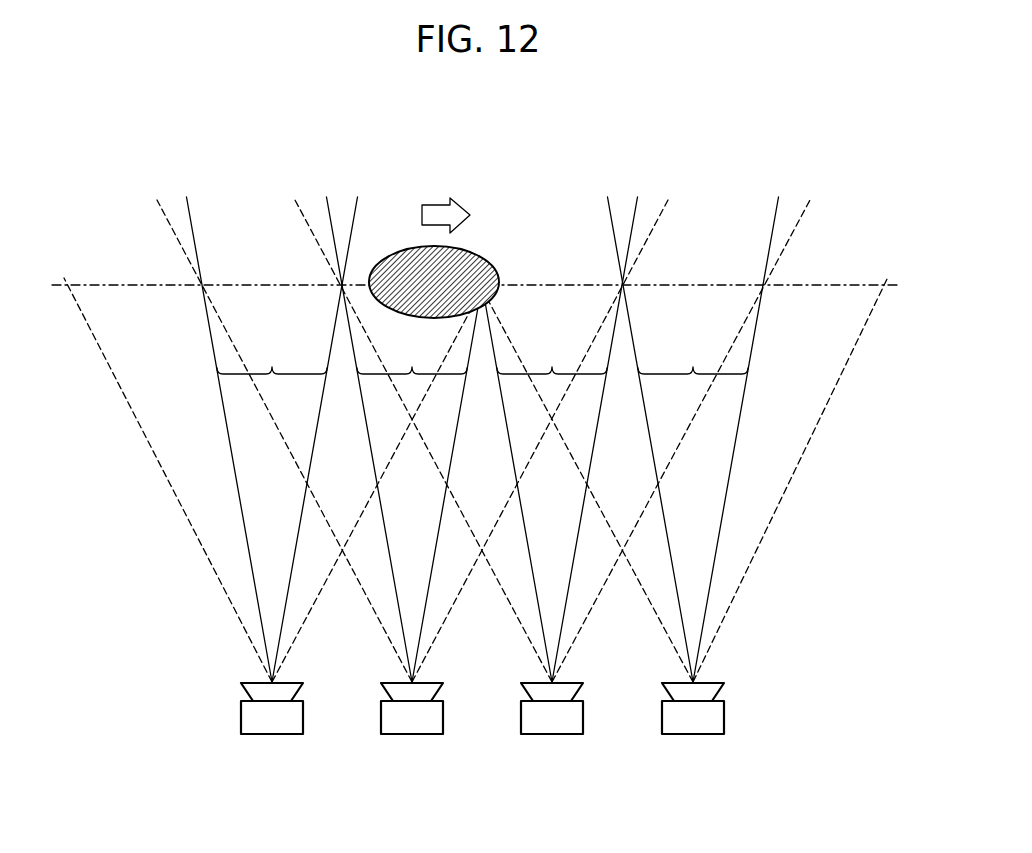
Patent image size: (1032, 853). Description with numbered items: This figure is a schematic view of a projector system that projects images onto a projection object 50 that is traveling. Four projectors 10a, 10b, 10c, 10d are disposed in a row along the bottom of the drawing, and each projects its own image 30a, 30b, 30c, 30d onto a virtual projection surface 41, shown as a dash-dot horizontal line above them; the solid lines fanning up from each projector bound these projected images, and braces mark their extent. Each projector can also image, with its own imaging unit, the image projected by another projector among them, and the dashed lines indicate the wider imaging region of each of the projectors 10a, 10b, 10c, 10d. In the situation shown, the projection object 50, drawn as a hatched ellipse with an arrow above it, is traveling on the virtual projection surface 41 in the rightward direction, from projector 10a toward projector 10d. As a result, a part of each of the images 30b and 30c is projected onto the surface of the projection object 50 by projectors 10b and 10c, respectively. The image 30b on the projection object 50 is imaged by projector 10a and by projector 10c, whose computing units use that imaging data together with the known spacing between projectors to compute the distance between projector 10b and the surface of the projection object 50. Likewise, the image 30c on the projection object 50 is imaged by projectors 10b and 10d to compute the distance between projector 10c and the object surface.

The virtual projection surface 41 is at (141, 284).
The projection object 50 is at (497, 270).
The projector 10a is at (272, 735).
The projector 10b is at (412, 735).
The projector 10c is at (552, 735).
The projector 10d is at (693, 735).
The image 30a is at (272, 439).
The image 30b is at (404, 439).
The image 30c is at (561, 439).
The image 30d is at (693, 439).